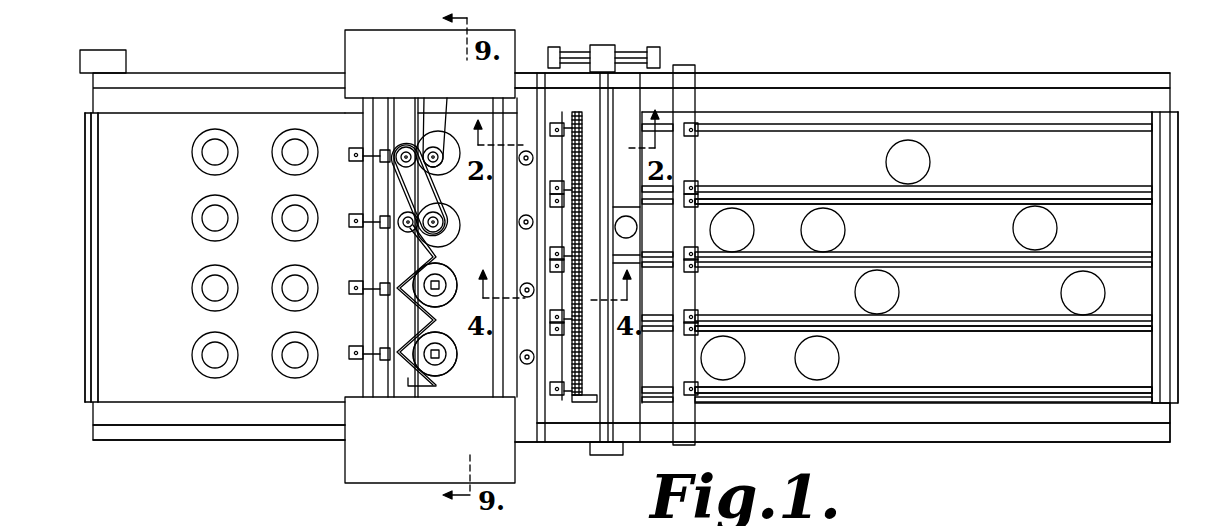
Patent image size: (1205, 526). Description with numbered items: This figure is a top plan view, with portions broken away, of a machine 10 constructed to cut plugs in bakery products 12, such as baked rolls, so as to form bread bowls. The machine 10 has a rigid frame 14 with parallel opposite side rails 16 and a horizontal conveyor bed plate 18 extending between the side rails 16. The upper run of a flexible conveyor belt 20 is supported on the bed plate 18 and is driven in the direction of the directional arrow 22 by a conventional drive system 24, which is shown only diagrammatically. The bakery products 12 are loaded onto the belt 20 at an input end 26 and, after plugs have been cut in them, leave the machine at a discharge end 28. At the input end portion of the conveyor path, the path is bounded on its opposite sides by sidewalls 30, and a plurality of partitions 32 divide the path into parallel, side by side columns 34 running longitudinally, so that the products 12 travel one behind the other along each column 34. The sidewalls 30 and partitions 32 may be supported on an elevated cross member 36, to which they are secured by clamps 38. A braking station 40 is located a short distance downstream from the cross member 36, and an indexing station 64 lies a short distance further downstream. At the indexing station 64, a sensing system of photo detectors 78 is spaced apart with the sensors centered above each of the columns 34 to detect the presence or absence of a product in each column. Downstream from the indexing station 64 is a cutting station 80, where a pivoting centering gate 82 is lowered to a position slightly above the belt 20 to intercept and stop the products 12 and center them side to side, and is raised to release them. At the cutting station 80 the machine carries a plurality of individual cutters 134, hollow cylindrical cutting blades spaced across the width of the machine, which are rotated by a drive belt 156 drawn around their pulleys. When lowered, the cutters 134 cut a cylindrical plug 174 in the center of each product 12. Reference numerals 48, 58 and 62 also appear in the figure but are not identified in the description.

The machine 10 is at (978, 63).
The bakery products 12 is at (216, 270).
The frame 14 is at (926, 73).
The side rails 16 is at (843, 75).
The conveyor bed plate 18 is at (1068, 420).
The conveyor belt 20 is at (145, 390).
The directional arrow 22 is at (163, 254).
The drive system 24 is at (126, 58).
The input end 26 is at (1170, 413).
The discharge end 28 is at (97, 290).
The sidewalls 30 is at (952, 368).
The partitions 32 is at (962, 230).
The columns 34 is at (1125, 180).
The cross member 36 is at (694, 156).
The clamps 38 is at (698, 187).
The braking station 40 is at (633, 449).
The rack 48 is at (594, 394).
The adjusting assembly 58 is at (632, 52).
The drive 62 is at (957, 521).
The indexing station 64 is at (524, 449).
The photo detectors 78 is at (526, 165).
The cutting station 80 is at (345, 48).
The centering gate 82 is at (405, 240).
The cutters 134 is at (436, 350).
The drive belt 156 is at (437, 113).
The cylindrical plug 174 is at (205, 150).